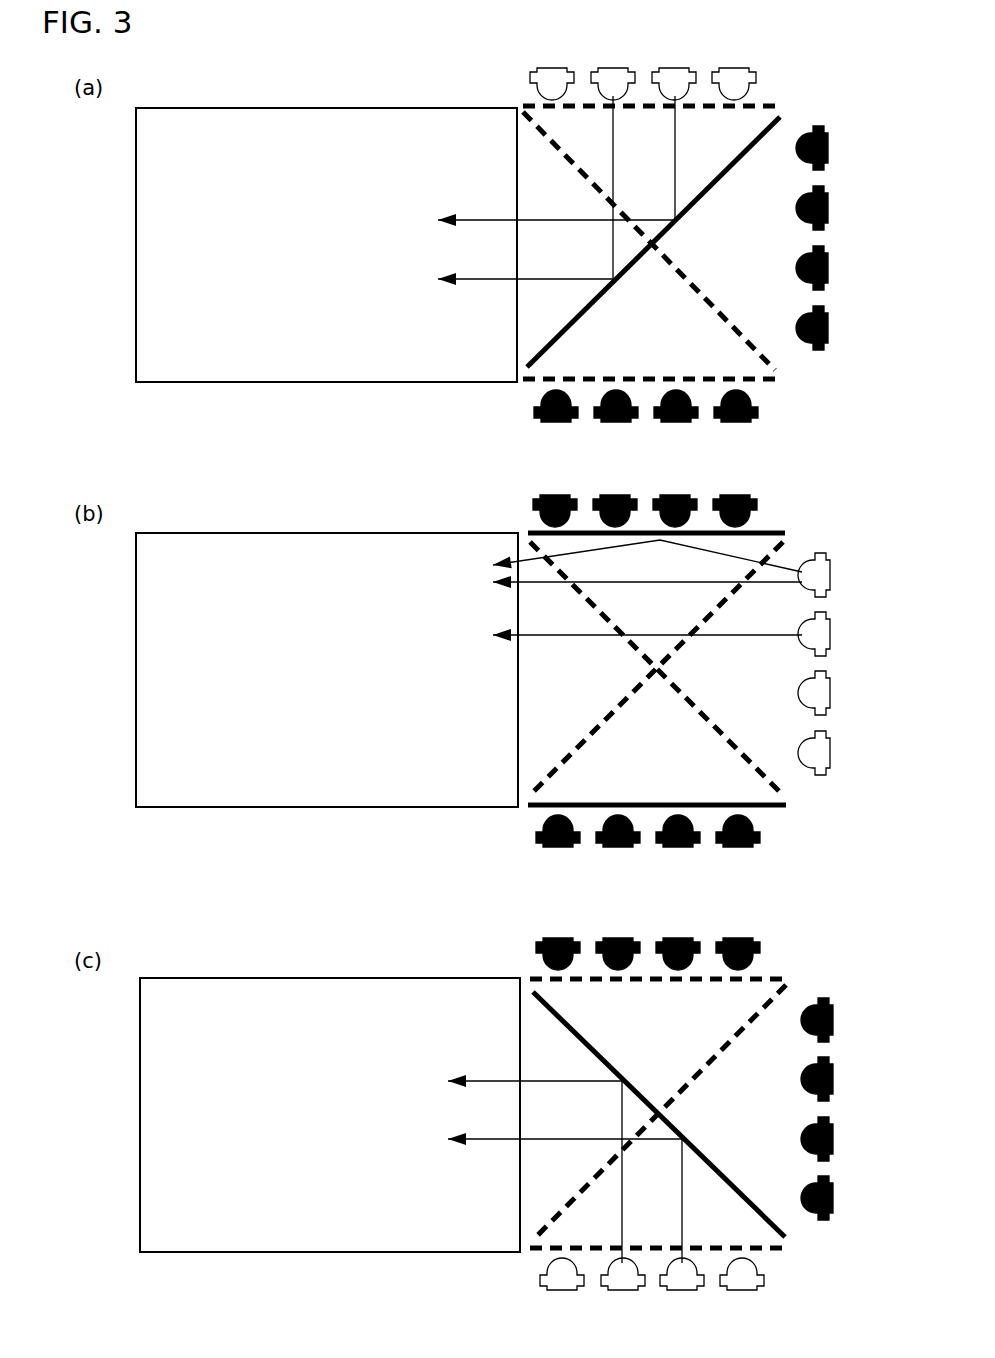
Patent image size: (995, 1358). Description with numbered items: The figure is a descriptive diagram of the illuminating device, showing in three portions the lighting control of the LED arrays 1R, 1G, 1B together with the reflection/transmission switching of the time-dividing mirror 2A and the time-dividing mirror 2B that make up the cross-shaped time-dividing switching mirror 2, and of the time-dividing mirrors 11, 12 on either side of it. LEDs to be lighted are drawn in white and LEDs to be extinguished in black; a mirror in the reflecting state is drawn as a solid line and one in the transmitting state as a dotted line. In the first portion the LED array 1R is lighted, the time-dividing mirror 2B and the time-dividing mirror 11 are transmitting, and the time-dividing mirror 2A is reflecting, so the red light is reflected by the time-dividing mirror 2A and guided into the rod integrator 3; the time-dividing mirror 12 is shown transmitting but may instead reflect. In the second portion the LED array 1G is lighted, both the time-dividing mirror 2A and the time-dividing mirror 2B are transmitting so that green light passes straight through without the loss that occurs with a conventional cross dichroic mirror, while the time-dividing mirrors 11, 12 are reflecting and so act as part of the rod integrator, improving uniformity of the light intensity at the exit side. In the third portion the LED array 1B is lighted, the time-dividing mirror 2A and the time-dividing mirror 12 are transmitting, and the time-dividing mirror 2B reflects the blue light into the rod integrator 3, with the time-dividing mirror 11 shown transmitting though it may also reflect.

The rod integrator 3 is at (305, 384).
The time-dividing mirror 11 is at (524, 105).
The time-dividing mirror 12 is at (772, 383).
The cross-shaped time-dividing switching mirror 2 is at (660, 665).
The time-dividing mirror 2A is at (722, 177).
The time-dividing mirror 2B is at (720, 310).
The LED array 1R is at (762, 64).
The LED array 1G is at (836, 122).
The LED array 1B is at (522, 412).